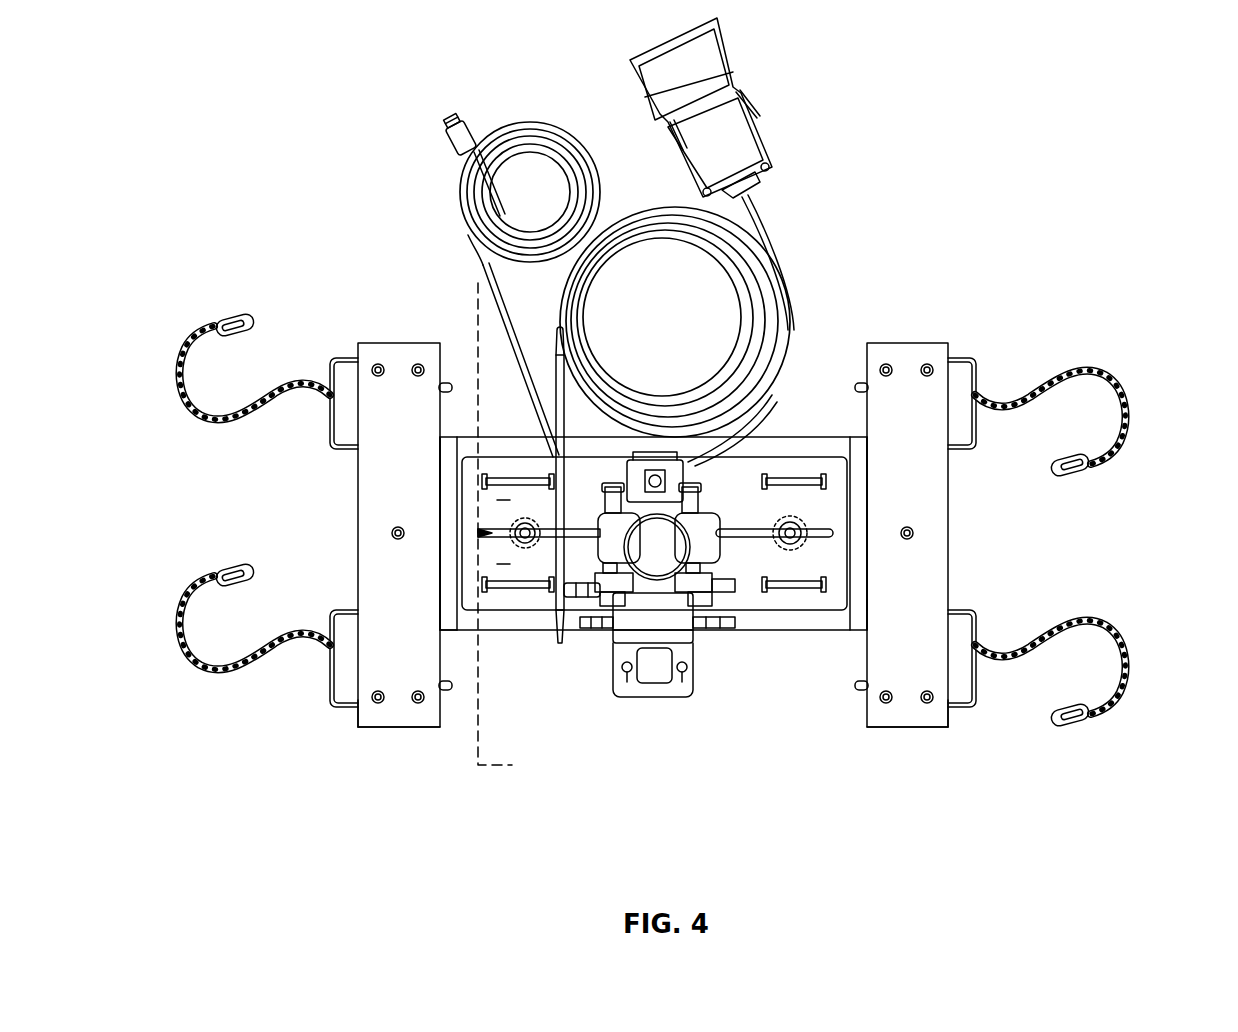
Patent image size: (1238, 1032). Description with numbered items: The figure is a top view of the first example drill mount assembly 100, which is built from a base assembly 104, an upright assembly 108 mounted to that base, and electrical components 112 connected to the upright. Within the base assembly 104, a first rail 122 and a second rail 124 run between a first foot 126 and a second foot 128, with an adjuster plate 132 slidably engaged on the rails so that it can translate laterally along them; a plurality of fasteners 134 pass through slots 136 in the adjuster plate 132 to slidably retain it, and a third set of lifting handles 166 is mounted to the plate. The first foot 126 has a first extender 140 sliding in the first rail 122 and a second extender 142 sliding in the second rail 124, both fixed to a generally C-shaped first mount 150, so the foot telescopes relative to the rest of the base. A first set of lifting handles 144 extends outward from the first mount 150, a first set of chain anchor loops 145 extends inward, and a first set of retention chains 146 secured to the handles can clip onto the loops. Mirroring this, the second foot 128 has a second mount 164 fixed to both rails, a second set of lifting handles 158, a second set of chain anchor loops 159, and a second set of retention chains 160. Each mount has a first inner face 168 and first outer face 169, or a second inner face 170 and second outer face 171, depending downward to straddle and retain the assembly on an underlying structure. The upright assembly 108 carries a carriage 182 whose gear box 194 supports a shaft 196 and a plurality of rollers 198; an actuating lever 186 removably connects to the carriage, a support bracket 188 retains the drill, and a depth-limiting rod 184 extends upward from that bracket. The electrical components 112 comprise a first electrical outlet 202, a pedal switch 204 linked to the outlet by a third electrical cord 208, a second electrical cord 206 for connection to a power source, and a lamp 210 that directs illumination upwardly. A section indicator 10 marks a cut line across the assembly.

The drill mount assembly 100 is at (180, 52).
The base assembly 104 is at (295, 797).
The upright assembly 108 is at (731, 611).
The electrical components 112 is at (428, 180).
The first rail 122 is at (500, 615).
The second rail 124 is at (842, 440).
The first foot 126 is at (360, 548).
The second foot 128 is at (950, 482).
The adjuster plate 132 is at (833, 563).
The plurality of fasteners 134 is at (552, 440).
The slots 136 is at (480, 533).
The first extender 140 is at (458, 622).
The second extender 142 is at (428, 456).
The first set of lifting handles 144 is at (330, 690).
The first set of chain anchor loops 145 is at (447, 383).
The first set of retention chains 146 is at (212, 410).
The first mount 150 is at (397, 714).
The second set of lifting handles 158 is at (980, 668).
The second set of chain anchor loops 159 is at (858, 383).
The second set of retention chains 160 is at (1136, 418).
The second mount 164 is at (935, 548).
The third set of lifting handles 166 is at (856, 685).
The first inner face 168 is at (440, 690).
The first outer face 169 is at (348, 722).
The second inner face 170 is at (870, 722).
The second outer face 171 is at (950, 722).
The carriage 182 is at (726, 680).
The depth-limiting rod 184 is at (690, 620).
The actuating lever 186 is at (568, 398).
The support bracket 188 is at (615, 662).
The gear box 194 is at (645, 597).
The shaft 196 is at (578, 640).
The plurality of rollers 198 is at (700, 580).
The first electrical outlet 202 is at (668, 452).
The pedal switch 204 is at (724, 86).
The second electrical cord 206 is at (515, 125).
The third electrical cord 208 is at (648, 240).
The lamp 210 is at (662, 552).
The section line 10 is at (478, 285).